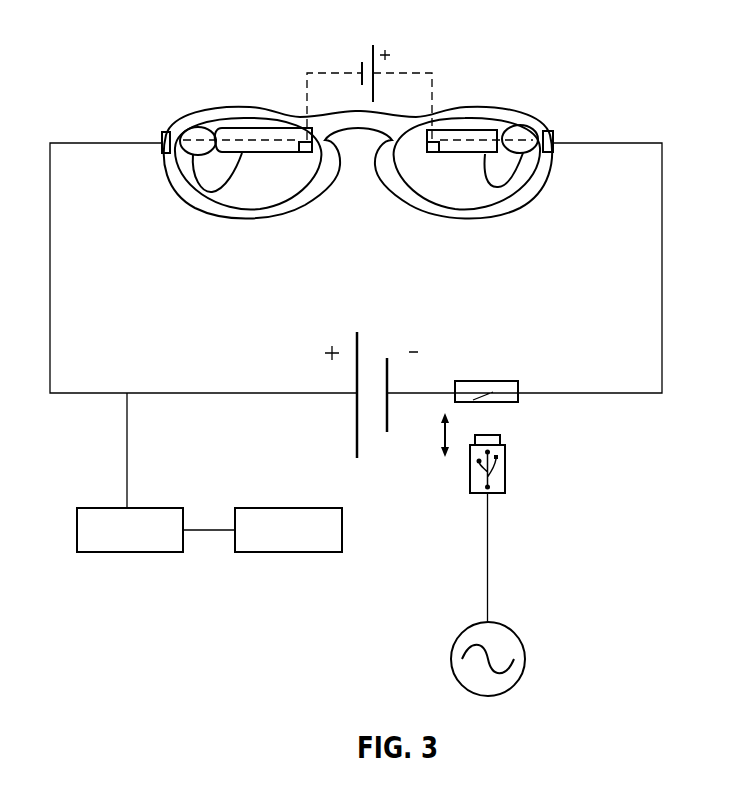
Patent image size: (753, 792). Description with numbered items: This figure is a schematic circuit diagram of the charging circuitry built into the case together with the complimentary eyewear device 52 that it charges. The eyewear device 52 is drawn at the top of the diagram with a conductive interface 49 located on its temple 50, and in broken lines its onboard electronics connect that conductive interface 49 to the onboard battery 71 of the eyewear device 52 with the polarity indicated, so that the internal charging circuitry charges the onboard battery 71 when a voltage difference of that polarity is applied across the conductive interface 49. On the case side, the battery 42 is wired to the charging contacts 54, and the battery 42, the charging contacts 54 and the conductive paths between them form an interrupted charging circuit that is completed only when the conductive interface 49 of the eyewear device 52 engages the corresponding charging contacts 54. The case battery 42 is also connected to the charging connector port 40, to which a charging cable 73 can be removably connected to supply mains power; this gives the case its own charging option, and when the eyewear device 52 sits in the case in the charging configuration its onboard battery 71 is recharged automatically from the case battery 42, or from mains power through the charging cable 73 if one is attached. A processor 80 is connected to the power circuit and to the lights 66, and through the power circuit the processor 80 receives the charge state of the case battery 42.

The eyewear device 52 is at (606, 48).
The onboard battery 71 is at (337, 57).
The temple 50 is at (240, 152).
The electrical contact 54 is at (303, 152).
The conductive interface 49 is at (428, 152).
The battery 42 is at (325, 411).
The charging connector port 40 is at (493, 380).
The charging cable 73 is at (488, 578).
The processor 80 is at (105, 508).
The lights 66 is at (290, 508).